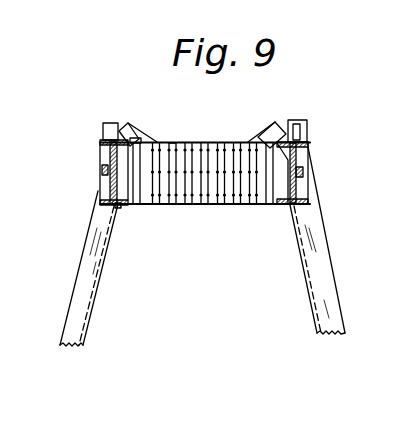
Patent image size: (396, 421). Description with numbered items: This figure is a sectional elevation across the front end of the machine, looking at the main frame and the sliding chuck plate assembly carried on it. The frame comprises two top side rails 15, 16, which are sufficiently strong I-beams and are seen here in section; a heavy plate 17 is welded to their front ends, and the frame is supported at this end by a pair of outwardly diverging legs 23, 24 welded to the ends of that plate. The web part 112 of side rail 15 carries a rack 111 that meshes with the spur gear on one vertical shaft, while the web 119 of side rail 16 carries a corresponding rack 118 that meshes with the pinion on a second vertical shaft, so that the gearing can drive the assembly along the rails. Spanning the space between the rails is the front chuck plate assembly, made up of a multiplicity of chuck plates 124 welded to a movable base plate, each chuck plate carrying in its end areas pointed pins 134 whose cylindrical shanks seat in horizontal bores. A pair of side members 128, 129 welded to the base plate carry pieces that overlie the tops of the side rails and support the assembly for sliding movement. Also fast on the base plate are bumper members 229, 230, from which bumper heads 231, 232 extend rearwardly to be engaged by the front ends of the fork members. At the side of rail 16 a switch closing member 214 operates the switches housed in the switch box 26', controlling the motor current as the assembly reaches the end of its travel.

The top side rail 15 is at (100, 152).
The top side rail 16 is at (308, 153).
The heavy plate 17 is at (300, 192).
The front leg 23 is at (80, 292).
The front leg 24 is at (322, 262).
The switch box 26' is at (313, 120).
The rack 111 is at (103, 173).
The web part 112 is at (133, 206).
The rack 118 is at (303, 174).
The web 119 is at (271, 205).
The chuck plates 124 is at (222, 206).
The side member 128 is at (145, 206).
The side member 129 is at (252, 200).
The pointed pins 134 is at (177, 147).
The switch closing member 214 is at (307, 136).
The bumper member 229 is at (262, 136).
The bumper member 230 is at (141, 129).
The bumper head 231 is at (125, 123).
The bumper head 232 is at (277, 122).